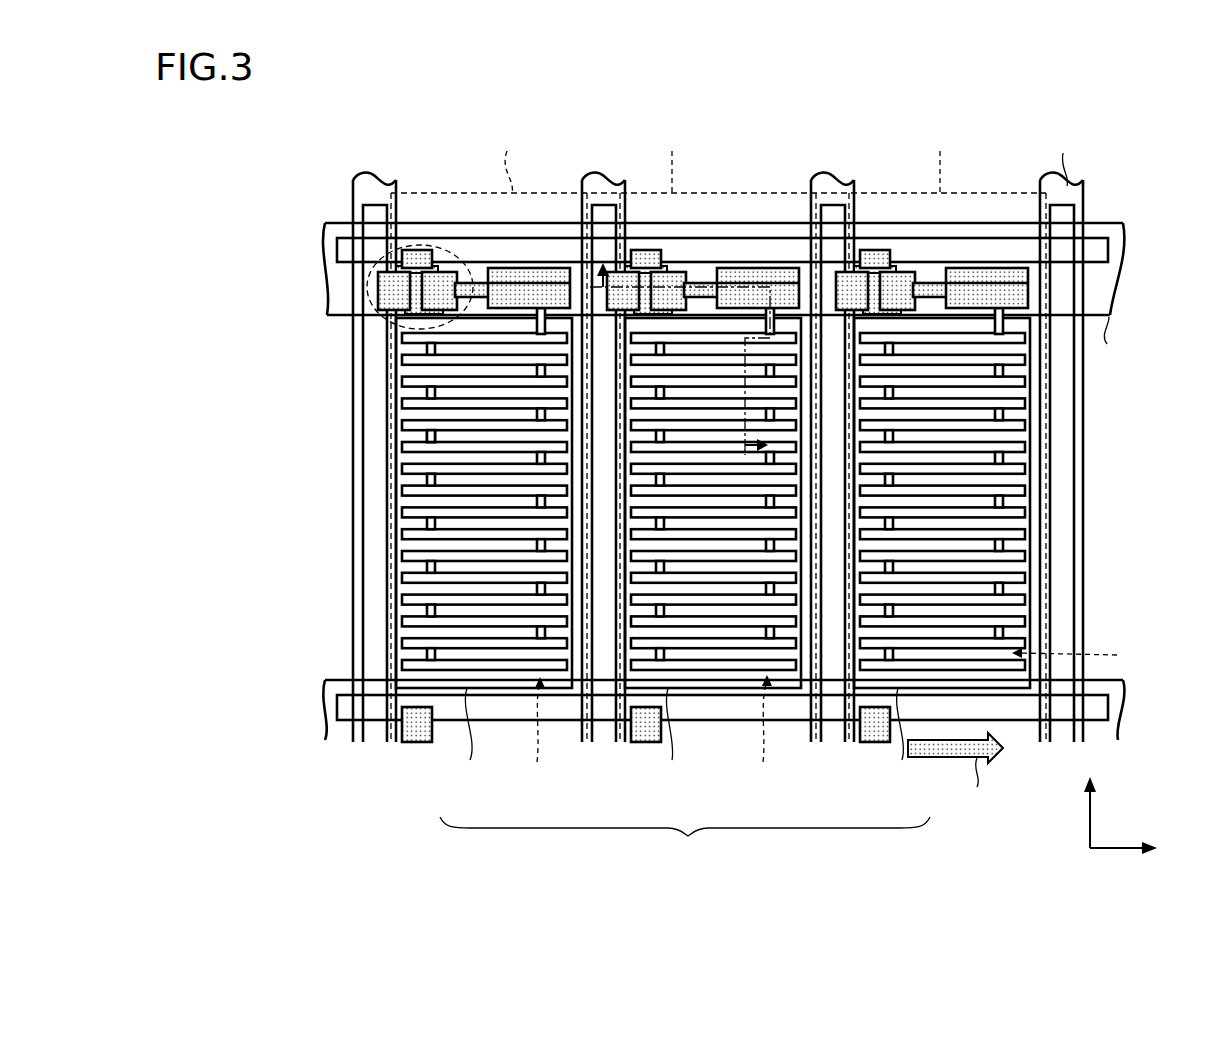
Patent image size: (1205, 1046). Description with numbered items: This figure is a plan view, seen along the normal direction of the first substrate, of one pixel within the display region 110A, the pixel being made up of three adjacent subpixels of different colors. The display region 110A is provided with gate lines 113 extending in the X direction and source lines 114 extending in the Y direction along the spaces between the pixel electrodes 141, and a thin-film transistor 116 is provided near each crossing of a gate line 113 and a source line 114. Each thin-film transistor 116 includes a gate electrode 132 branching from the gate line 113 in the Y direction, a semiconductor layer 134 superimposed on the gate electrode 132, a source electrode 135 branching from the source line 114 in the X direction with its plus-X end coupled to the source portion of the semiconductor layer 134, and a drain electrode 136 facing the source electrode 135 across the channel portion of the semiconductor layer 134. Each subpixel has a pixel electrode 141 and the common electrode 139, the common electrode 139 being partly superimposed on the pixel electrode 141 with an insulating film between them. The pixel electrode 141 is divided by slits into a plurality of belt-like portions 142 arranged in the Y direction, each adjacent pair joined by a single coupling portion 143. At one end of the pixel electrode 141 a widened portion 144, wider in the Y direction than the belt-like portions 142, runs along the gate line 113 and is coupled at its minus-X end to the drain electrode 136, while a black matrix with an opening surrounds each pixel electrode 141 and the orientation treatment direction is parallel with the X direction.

The display region 110A is at (378, 123).
The gate line 113 is at (343, 223).
The source line 114 is at (604, 178).
The thin-film transistor 116 is at (443, 278).
The gate electrode 132 is at (425, 258).
The semiconductor layer 134 is at (415, 277).
The source electrode 135 is at (385, 298).
The drain electrode 136 is at (547, 270).
The common electrode 139 is at (715, 672).
The pixel electrode 141 is at (780, 670).
The belt-like portion 142 is at (405, 424).
The coupling portion 143 is at (423, 433).
The widened portion 144 is at (478, 212).